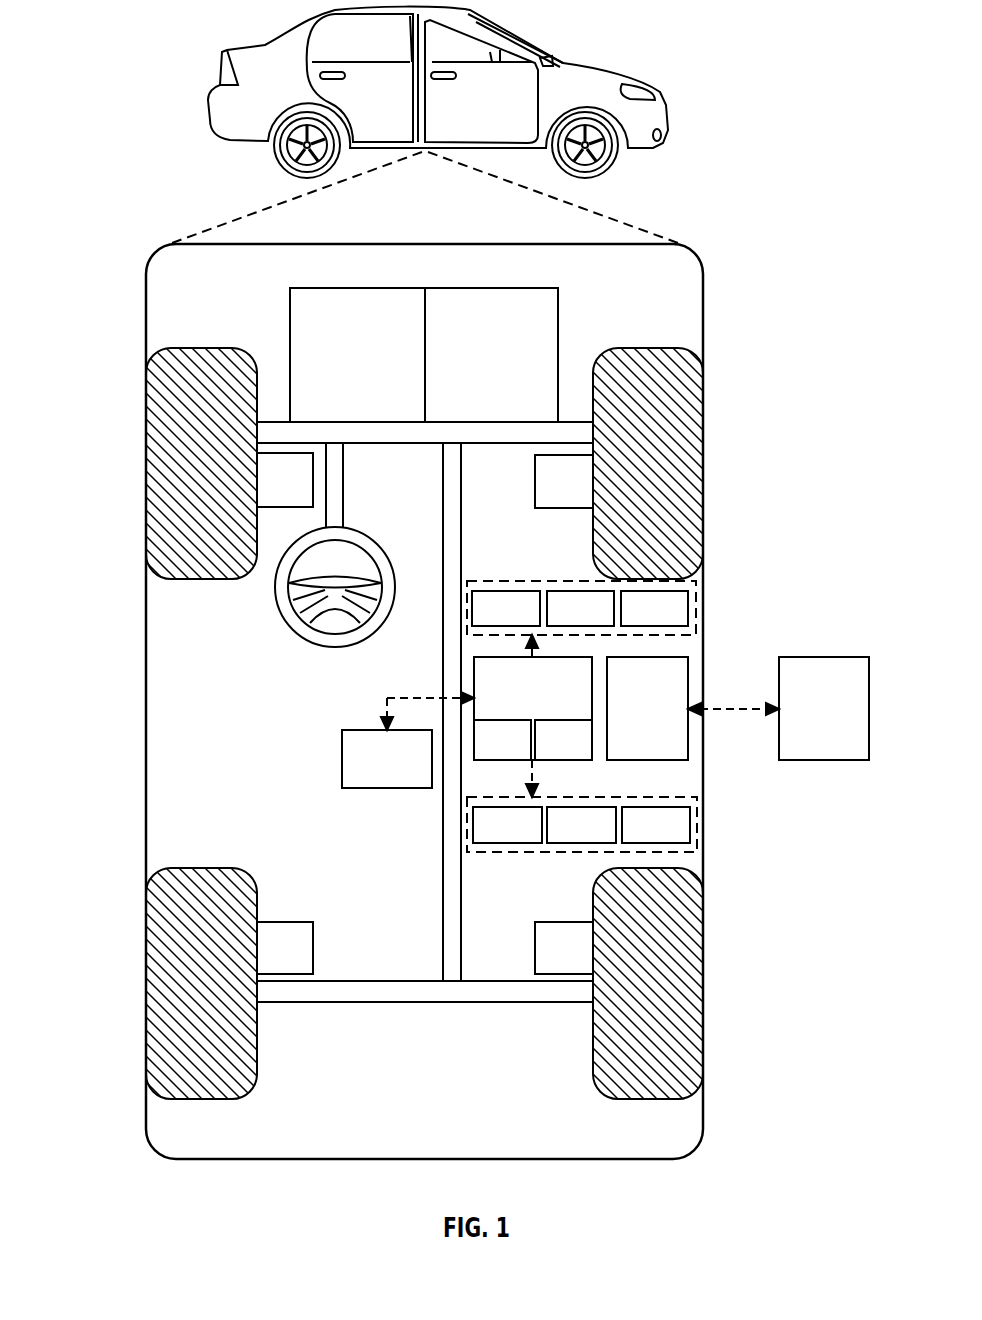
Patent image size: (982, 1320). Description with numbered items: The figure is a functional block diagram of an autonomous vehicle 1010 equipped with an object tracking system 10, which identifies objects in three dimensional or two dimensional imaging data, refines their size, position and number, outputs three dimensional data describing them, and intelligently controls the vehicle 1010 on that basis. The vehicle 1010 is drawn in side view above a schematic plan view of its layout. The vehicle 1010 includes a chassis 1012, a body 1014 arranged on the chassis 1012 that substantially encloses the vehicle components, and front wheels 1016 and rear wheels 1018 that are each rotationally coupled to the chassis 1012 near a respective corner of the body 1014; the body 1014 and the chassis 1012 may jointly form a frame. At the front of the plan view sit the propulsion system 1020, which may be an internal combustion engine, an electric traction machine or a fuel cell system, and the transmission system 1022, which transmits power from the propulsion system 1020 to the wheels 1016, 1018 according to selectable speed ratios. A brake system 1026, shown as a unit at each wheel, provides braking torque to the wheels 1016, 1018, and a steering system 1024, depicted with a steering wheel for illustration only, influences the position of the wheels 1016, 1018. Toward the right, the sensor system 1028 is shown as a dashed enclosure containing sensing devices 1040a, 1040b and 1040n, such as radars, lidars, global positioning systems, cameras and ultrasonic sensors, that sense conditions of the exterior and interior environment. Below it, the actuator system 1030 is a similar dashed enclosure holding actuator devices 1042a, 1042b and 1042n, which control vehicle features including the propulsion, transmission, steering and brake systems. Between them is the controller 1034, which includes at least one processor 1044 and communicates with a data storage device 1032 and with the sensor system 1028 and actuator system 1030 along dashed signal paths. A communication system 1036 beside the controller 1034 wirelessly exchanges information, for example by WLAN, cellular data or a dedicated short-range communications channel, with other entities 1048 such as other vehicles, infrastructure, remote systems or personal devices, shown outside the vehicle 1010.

The object tracking system 10 is at (421, 694).
The vehicle 1010 is at (220, 80).
The chassis 1012 is at (443, 862).
The body 1014 is at (146, 668).
The front wheels 1016 is at (202, 347).
The rear wheels 1018 is at (200, 1100).
The propulsion system 1020 is at (382, 367).
The transmission system 1022 is at (516, 367).
The steering system 1024 is at (350, 504).
The brake system 1026 is at (310, 492).
The sensor system 1028 is at (581, 592).
The actuator system 1030 is at (582, 840).
The data storage device 1032 is at (412, 770).
The controller 1034 is at (533, 708).
The communication system 1036 is at (672, 720).
The sensing device 1040a is at (537, 620).
The sensing device 1040b is at (612, 620).
The sensing device 1040n is at (686, 620).
The actuator device 1042a is at (538, 836).
The actuator device 1042b is at (612, 836).
The actuator device 1042n is at (687, 836).
The processor 1044 is at (527, 750).
The other entities 1048 is at (849, 720).